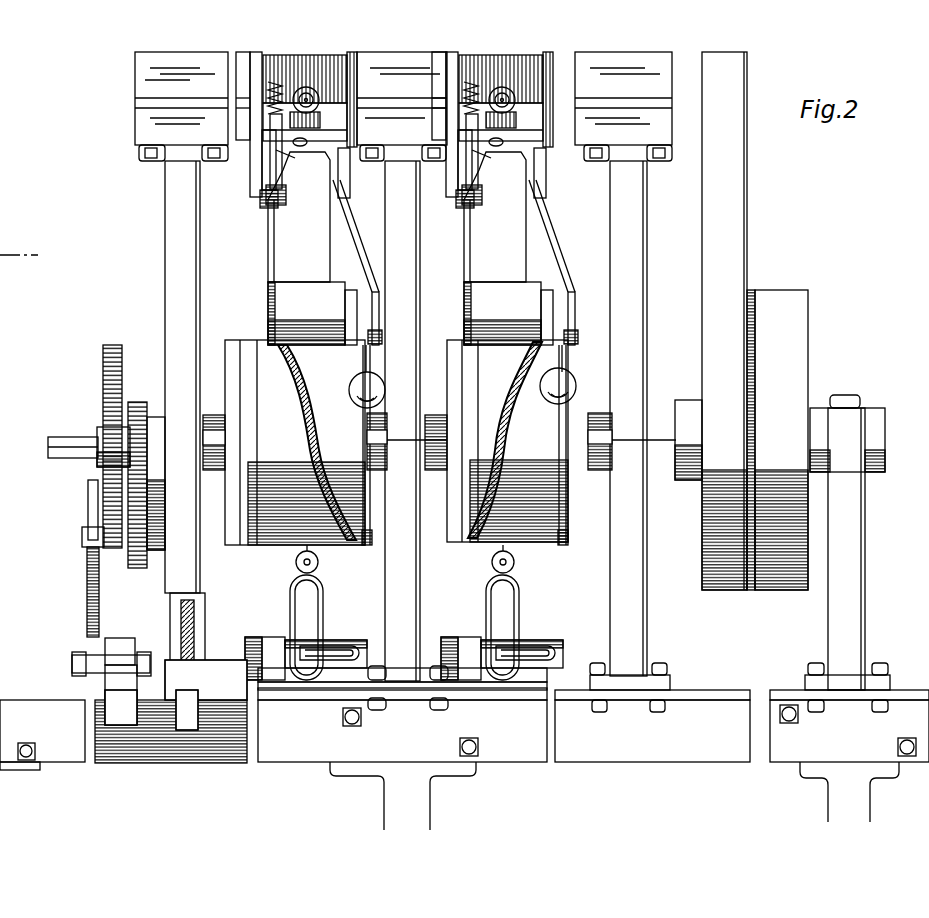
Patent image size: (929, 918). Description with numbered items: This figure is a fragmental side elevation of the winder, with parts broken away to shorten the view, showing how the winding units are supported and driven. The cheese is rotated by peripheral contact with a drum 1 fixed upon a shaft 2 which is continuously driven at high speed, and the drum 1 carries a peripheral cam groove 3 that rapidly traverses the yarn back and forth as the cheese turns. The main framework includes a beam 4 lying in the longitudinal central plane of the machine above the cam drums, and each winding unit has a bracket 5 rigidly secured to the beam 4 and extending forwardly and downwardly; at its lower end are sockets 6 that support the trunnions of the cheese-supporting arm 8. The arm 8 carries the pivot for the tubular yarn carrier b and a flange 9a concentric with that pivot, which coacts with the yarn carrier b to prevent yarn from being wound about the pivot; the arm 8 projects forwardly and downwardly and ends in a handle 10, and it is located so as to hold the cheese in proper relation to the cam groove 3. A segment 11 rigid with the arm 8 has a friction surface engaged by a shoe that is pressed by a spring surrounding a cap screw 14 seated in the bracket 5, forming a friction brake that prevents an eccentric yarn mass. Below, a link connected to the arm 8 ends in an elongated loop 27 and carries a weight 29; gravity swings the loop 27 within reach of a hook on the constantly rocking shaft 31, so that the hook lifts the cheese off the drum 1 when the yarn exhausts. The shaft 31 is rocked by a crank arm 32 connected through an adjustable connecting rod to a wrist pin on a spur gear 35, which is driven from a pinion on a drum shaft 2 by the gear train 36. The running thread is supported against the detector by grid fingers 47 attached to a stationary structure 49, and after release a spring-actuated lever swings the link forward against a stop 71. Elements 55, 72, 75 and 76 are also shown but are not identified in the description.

The drum 1 is at (255, 348).
The shaft 2 is at (884, 432).
The peripheral cam groove 3 is at (500, 410).
The beam 4 is at (150, 76).
The bracket 5 is at (306, 394).
The sockets 6 is at (562, 822).
The cheese-supporting lever or arm 8 is at (348, 238).
The flange 9a is at (360, 305).
The handle 10 is at (358, 398).
The segment 11 is at (262, 205).
The cap screw 14 is at (19, 195).
The elongated loop 27 is at (324, 600).
The weight 29 is at (320, 562).
The rocking shaft 31 is at (216, 668).
The crank arm 32 is at (118, 640).
The spur gear 35 is at (106, 360).
The gear train 36 is at (132, 570).
The fingers 47 is at (338, 644).
The stationary structure 49 is at (270, 646).
The connecting rod 55 is at (88, 563).
The stop 71 is at (372, 530).
The cylinder 72 is at (397, 217).
The spring 75 is at (300, 136).
The bolt 76 is at (502, 130).
The tubular yarn carrier b is at (270, 300).